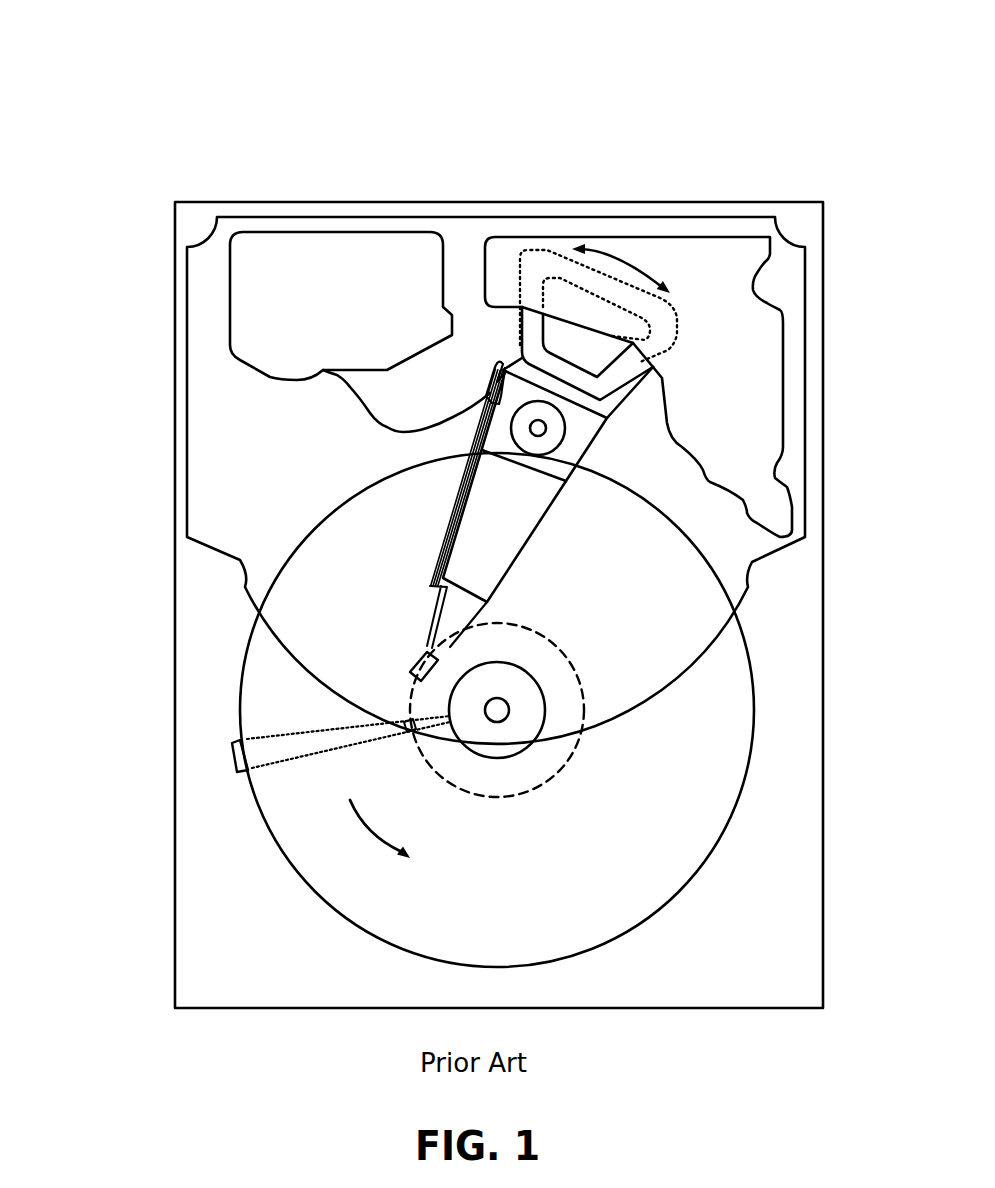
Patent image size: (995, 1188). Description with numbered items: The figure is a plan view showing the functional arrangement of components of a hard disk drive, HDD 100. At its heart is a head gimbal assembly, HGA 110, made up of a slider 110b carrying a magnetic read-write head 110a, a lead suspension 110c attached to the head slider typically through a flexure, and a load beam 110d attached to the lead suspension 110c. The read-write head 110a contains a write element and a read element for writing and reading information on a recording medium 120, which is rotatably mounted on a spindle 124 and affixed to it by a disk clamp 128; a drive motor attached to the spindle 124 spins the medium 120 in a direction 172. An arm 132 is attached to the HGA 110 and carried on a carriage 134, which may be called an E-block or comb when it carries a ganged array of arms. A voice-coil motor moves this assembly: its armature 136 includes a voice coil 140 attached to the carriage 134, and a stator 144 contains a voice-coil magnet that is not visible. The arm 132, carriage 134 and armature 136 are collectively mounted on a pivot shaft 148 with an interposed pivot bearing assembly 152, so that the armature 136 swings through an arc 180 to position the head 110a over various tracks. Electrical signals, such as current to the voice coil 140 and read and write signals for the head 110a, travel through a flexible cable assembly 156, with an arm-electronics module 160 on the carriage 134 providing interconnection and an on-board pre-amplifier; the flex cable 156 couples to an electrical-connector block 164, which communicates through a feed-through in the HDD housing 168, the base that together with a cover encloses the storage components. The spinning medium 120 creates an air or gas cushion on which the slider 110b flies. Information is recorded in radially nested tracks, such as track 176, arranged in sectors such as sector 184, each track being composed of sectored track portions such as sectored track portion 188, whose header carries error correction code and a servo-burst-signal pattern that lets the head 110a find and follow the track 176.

The hard disk drive 100 is at (100, 80).
The head gimbal assembly 110 is at (100, 520).
The magnetic read-write head 110a is at (413, 675).
The slider 110b is at (420, 657).
The lead suspension 110c is at (433, 615).
The load beam 110d is at (447, 584).
The recording medium 120 is at (680, 660).
The spindle 124 is at (500, 710).
The disk clamp 128 is at (523, 725).
The arm 132 is at (490, 543).
The carriage 134 is at (557, 462).
The armature 136 is at (520, 343).
The voice coil 140 is at (532, 320).
The stator 144 is at (750, 330).
The pivot shaft 148 is at (545, 428).
The pivot bearing assembly 152 is at (552, 440).
The flexible cable assembly 156 is at (350, 393).
The arm-electronics module 160 is at (493, 400).
The electrical-connector block 164 is at (255, 303).
The HDD housing 168 is at (810, 208).
The direction of medium rotation 172 is at (383, 830).
The track 176 is at (573, 672).
The arc 180 is at (622, 255).
The sector 184 is at (232, 757).
The sectored track portion 188 is at (403, 726).